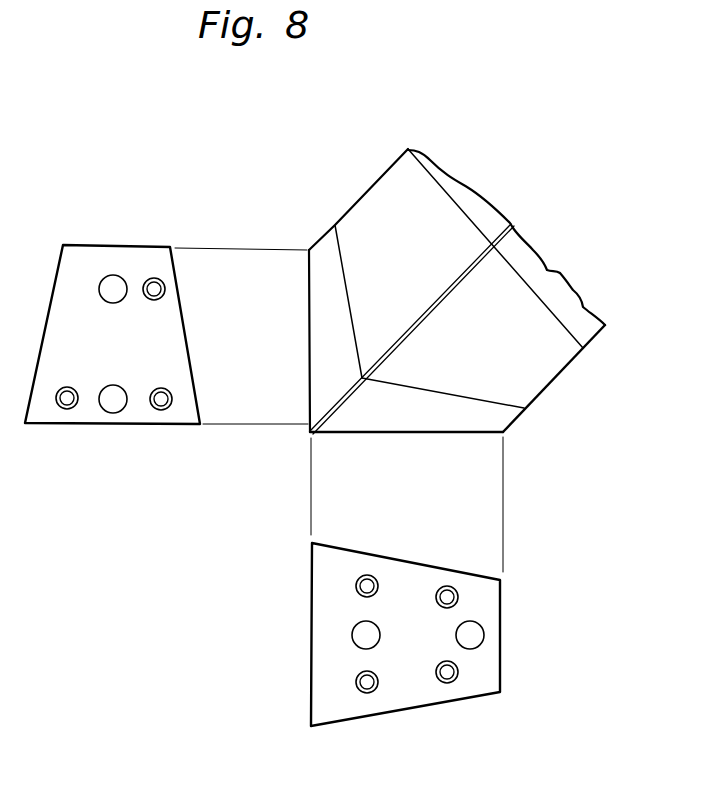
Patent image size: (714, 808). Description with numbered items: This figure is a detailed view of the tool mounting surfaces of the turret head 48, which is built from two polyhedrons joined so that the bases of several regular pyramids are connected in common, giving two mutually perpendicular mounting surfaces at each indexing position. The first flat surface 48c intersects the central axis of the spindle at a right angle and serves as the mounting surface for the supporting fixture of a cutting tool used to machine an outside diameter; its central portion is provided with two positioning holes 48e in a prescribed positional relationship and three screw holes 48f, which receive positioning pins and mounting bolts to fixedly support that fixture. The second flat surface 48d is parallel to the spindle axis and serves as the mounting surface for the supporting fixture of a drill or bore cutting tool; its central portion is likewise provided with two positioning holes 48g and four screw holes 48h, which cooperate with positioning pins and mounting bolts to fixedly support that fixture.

The turret head 48 is at (548, 380).
The first flat surface 48c is at (186, 335).
The second flat surface 48d is at (405, 433).
The positioning holes 48e is at (115, 275).
The screw holes 48f is at (165, 289).
The positioning holes 48g is at (351, 635).
The screw holes 48h is at (445, 586).